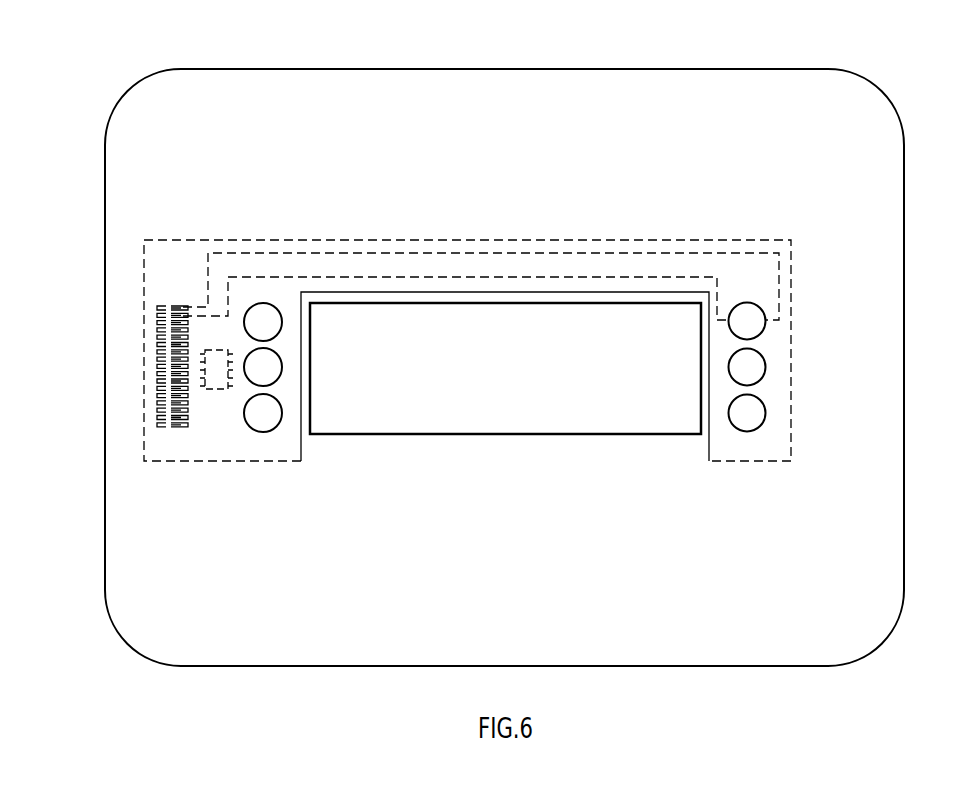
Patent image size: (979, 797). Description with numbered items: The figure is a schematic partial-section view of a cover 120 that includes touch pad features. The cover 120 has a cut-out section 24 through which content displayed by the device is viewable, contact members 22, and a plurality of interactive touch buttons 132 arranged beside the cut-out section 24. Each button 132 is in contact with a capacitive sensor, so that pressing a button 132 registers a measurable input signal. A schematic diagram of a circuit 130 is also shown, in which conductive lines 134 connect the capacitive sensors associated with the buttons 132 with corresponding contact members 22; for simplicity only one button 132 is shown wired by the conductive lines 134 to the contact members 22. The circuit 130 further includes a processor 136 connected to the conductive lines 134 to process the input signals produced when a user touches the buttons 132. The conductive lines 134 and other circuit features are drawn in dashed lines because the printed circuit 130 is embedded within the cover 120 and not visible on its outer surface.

The cover 120 is at (880, 92).
The circuit 130 is at (792, 422).
The conductive lines 134 is at (729, 252).
The cut-out section 24 is at (564, 417).
The interactive touch buttons 132 is at (747, 367).
The contact members 22 is at (158, 364).
The processor 136 is at (215, 380).